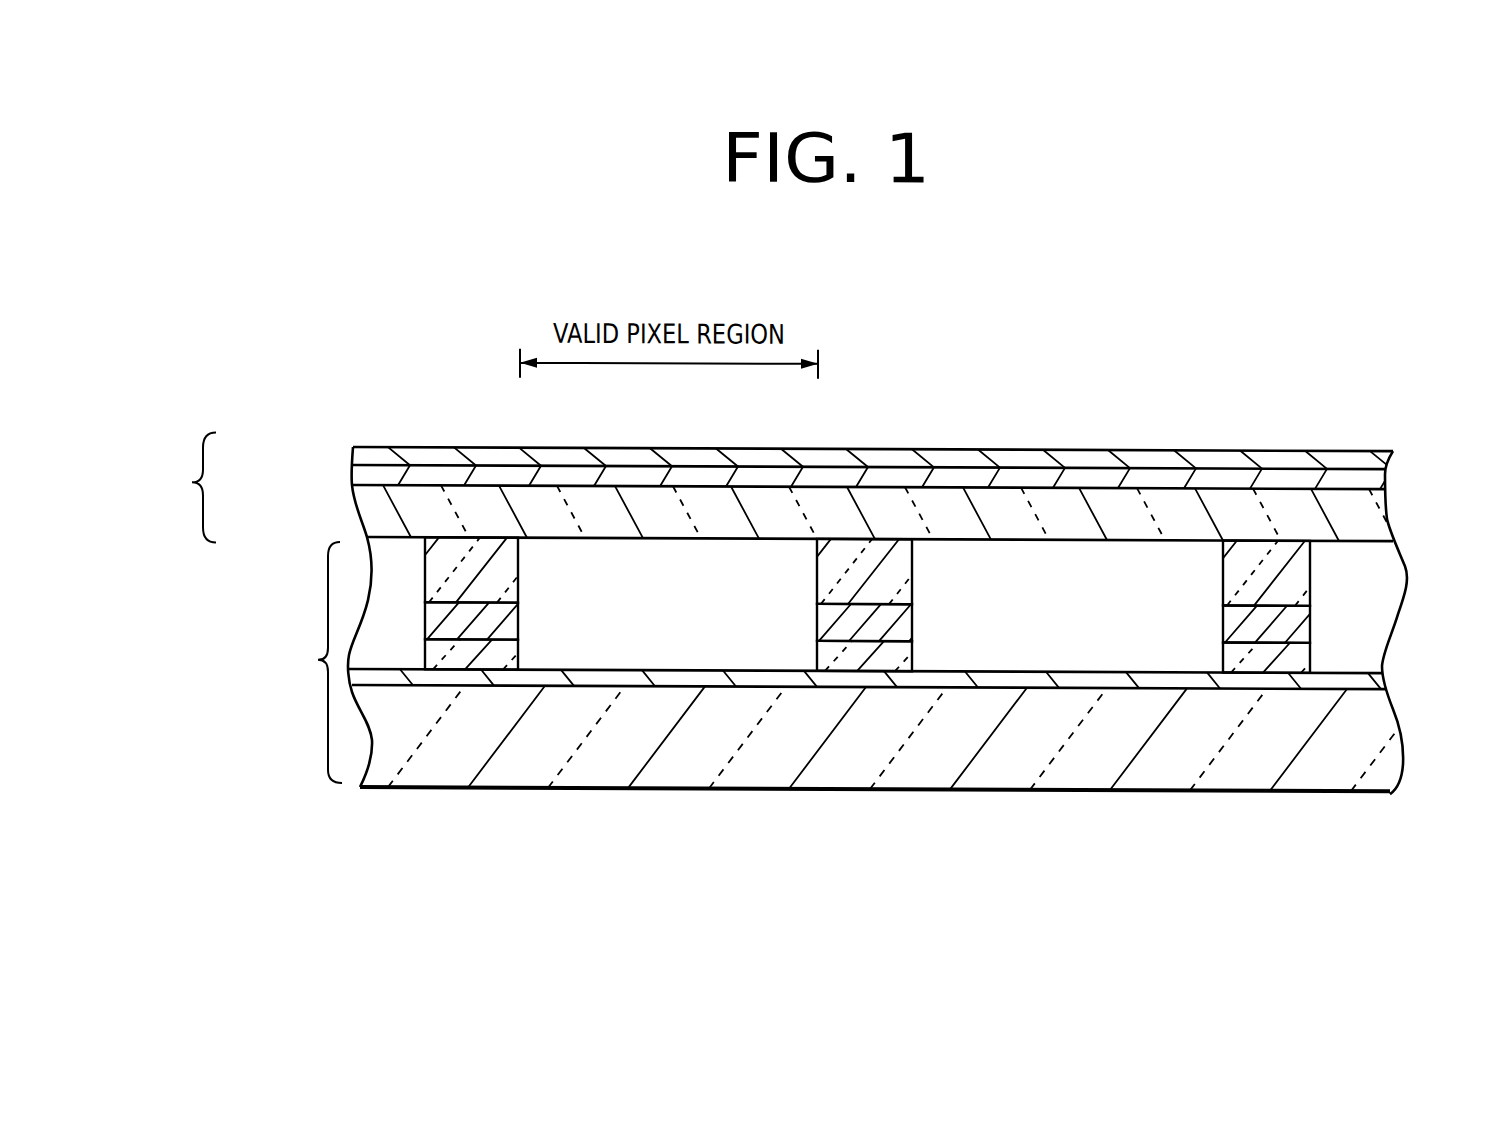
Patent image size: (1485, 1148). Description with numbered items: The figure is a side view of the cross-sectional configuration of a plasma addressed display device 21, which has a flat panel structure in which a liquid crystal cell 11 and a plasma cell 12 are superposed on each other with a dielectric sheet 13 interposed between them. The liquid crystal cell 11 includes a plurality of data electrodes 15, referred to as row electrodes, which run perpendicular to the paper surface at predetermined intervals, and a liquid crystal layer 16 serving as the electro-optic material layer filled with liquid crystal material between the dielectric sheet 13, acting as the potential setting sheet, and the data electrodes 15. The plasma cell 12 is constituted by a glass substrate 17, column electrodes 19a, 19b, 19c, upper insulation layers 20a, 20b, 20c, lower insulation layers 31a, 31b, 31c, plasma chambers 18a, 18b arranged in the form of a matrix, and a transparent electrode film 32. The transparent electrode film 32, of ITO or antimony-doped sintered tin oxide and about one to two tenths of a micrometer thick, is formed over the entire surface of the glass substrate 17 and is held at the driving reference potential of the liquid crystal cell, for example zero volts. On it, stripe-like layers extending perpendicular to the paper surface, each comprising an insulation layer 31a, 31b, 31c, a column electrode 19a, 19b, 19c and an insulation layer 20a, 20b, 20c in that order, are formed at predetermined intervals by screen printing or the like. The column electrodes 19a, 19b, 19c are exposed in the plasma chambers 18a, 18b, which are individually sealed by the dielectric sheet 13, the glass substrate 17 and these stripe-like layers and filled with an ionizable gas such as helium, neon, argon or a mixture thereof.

The plasma addressed display device 21 is at (1410, 271).
The liquid crystal cell 11 is at (182, 487).
The plasma cell 12 is at (312, 662).
The dielectric sheet 13 is at (372, 530).
The data electrodes 15 is at (358, 449).
The liquid crystal layer 16 is at (356, 475).
The glass substrate 17 is at (883, 785).
The plasma chamber 18a is at (743, 638).
The plasma chamber 18b is at (1180, 639).
The column electrode 19a is at (518, 604).
The column electrode 19b is at (912, 602).
The column electrode 19c is at (1312, 608).
The insulation layer 20a is at (512, 562).
The insulation layer 20b is at (905, 560).
The insulation layer 20c is at (1310, 566).
The insulation layer 31a is at (508, 656).
The insulation layer 31b is at (903, 654).
The insulation layer 31c is at (1312, 646).
The transparent electrode film 32 is at (1383, 675).